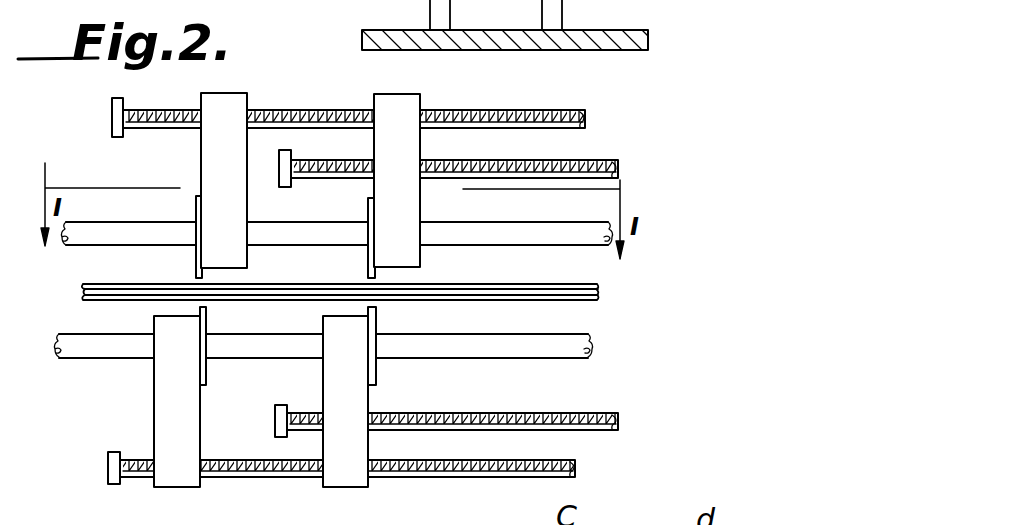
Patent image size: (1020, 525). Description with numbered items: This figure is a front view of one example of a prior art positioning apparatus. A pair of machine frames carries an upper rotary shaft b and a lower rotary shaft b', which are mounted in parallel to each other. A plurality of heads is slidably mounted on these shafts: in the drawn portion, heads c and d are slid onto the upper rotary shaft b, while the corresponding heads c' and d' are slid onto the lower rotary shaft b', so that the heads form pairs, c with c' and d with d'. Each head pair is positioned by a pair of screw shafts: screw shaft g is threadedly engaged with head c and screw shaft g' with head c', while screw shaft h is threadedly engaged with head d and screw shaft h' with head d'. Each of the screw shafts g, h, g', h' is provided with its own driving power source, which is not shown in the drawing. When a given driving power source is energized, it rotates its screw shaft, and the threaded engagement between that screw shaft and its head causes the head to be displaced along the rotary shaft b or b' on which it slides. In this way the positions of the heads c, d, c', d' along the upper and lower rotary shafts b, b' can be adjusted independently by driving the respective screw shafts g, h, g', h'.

The head c is at (233, 171).
The screw shaft g is at (348, 104).
The head d is at (411, 172).
The screw shaft h is at (458, 159).
The upper rotary shaft b is at (336, 221).
The head c' is at (180, 416).
The screw shaft g' is at (341, 488).
The head d' is at (364, 410).
The lower rotary shaft b' is at (330, 362).
The screw shaft h' is at (464, 428).